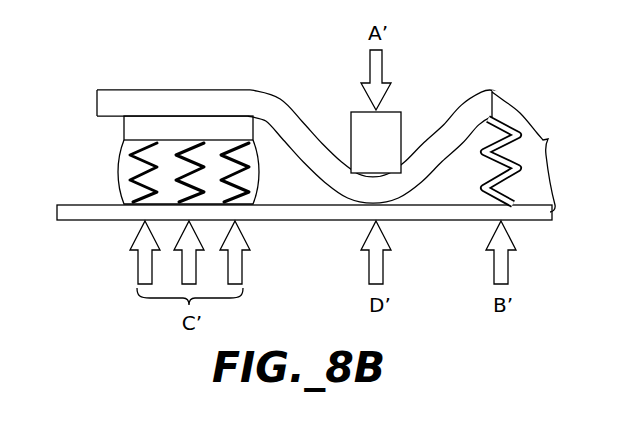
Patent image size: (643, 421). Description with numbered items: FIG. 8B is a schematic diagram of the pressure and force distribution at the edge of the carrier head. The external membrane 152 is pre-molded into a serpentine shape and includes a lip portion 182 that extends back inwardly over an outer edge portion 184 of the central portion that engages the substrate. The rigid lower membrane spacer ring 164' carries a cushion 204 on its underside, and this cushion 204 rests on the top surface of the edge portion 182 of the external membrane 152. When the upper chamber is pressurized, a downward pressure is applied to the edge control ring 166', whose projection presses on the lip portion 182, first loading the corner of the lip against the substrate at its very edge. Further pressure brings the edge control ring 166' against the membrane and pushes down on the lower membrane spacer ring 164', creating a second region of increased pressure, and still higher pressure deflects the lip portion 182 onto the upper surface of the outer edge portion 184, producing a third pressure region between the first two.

The outer edge portion 184 is at (296, 112).
The lower membrane spacer ring 164' is at (140, 140).
The cushion 204 is at (117, 172).
The edge control ring 166' is at (338, 104).
The lip portion 182 is at (267, 221).
The external membrane 152 is at (539, 152).